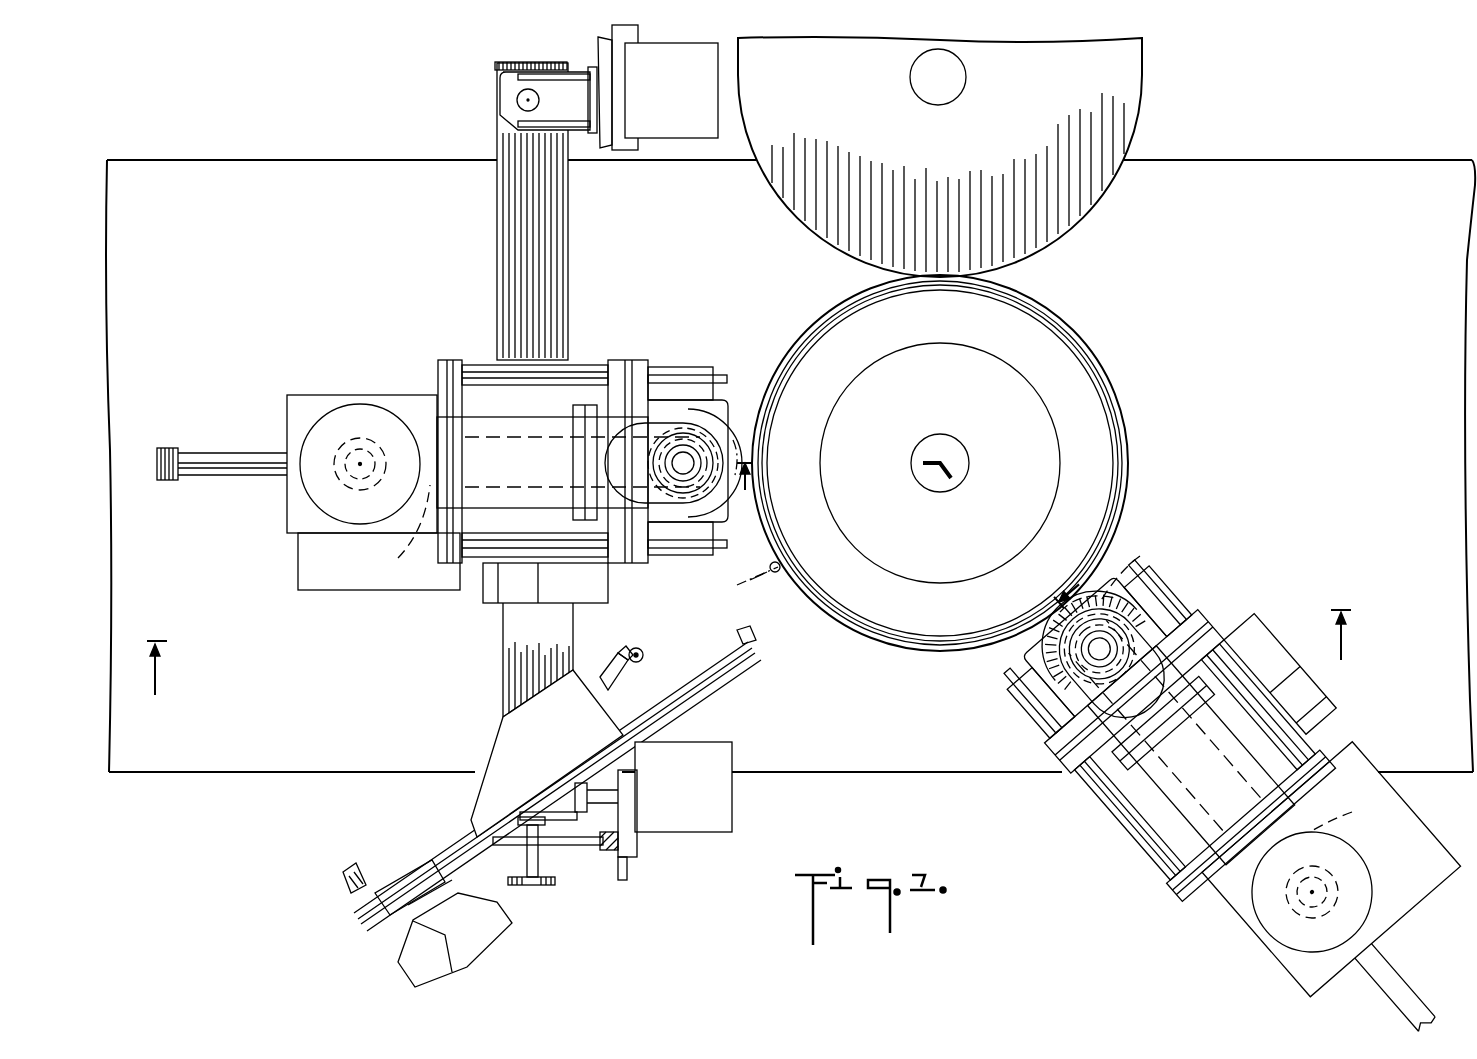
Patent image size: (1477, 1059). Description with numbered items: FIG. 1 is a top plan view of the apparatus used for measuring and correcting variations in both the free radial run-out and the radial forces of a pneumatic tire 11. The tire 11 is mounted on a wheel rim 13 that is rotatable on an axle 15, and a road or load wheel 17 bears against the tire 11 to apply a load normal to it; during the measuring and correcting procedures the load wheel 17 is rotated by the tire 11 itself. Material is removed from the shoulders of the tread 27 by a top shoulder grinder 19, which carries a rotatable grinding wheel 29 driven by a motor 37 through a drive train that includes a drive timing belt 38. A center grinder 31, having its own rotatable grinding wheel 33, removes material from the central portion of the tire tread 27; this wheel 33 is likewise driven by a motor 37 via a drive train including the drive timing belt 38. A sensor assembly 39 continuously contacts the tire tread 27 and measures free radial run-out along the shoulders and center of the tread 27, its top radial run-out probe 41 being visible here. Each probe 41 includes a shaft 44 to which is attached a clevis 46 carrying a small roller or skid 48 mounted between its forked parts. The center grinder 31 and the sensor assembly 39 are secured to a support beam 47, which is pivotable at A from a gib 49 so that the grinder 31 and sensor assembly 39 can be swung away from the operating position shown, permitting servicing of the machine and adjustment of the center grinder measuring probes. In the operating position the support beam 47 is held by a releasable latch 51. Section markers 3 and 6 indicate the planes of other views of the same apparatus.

The pivot point A is at (517, 100).
The section line 3- 3 is at (749, 641).
The section line 6- 6 is at (910, 566).
The pneumatic tire 11 is at (1100, 476).
The wheel rim 13 is at (880, 558).
The axle 15 is at (942, 436).
The load wheel 17 is at (1085, 226).
The top shoulder grinder 19 is at (1120, 844).
The tread 27 is at (1132, 445).
The grinding wheel 29 is at (1112, 571).
The center grinder 31 is at (374, 380).
The grinding wheel 33 is at (733, 440).
The motor 37 is at (325, 420).
The drive timing belt 38 is at (875, 658).
The sensor assembly 39 is at (618, 693).
The top radial run-out probe 41 is at (650, 640).
The shaft 44 is at (618, 666).
The clevis 46 is at (620, 655).
The support beam 47 is at (570, 275).
The roller or skid 48 is at (643, 656).
The gib 49 is at (603, 96).
The releasable latch 51 is at (614, 852).